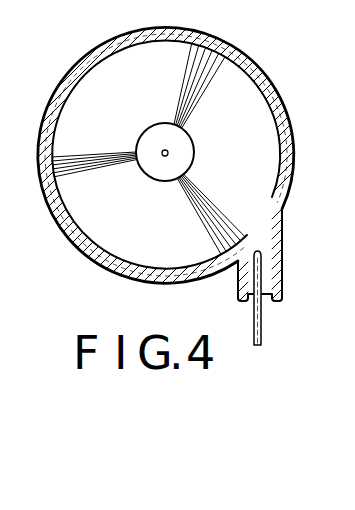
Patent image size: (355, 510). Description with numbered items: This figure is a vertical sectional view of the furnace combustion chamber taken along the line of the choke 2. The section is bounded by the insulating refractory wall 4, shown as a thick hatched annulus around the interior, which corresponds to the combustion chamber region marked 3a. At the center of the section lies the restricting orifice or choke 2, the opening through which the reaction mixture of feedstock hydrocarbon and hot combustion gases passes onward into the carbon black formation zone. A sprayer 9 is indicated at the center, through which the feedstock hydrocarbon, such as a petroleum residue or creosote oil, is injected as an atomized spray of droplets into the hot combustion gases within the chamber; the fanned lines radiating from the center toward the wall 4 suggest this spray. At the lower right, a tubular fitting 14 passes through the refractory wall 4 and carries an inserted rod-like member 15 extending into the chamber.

The restricting orifice or choke 2 is at (165, 152).
The chamber 3a is at (119, 210).
The insulating refractory wall 4 is at (284, 103).
The sprayer 9 is at (168, 154).
The tubular stem 14 is at (283, 268).
The rod 15 is at (262, 330).